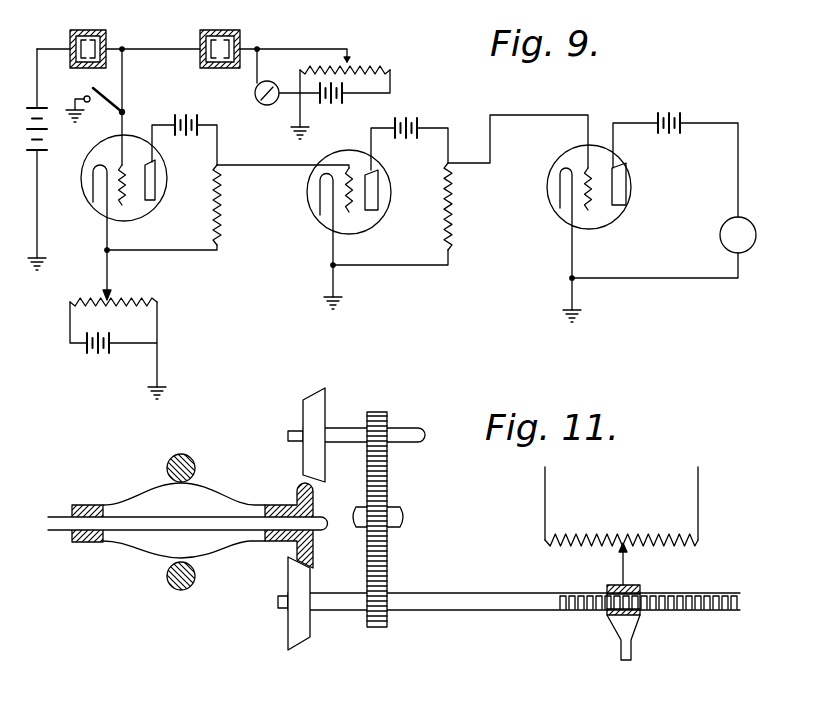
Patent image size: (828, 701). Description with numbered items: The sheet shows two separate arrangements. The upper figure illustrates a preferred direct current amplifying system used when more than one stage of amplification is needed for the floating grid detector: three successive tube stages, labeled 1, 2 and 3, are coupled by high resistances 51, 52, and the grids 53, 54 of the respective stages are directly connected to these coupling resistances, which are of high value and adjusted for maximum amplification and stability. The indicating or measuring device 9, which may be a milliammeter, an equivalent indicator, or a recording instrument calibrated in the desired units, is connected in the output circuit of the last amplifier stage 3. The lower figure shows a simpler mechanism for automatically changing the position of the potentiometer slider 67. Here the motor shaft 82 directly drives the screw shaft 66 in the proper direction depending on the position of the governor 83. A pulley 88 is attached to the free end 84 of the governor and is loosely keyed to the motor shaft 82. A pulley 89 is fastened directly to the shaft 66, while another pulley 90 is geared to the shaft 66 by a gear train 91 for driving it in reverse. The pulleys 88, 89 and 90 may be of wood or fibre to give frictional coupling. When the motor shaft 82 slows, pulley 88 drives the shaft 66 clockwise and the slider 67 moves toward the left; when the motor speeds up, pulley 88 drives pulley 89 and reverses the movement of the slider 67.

In FIG. 9, the first vacuum tube 1 is at (138, 218).
In FIG. 9, the second vacuum tube 2 is at (360, 229).
In FIG. 9, the third vacuum tube 3 is at (608, 229).
In FIG. 9, the indicating or measuring device 9 is at (758, 215).
In FIG. 9, the coupling resistance 51 is at (221, 220).
In FIG. 9, the coupling resistance 52 is at (462, 201).
In FIG. 9, the grid 53 is at (353, 166).
In FIG. 9, the grid 54 is at (591, 167).
In FIG. 11, the screw shaft 66 is at (490, 592).
In FIG. 11, the slider 67 is at (620, 551).
In FIG. 11, the motor shaft 82 is at (63, 528).
In FIG. 11, the governor 83 is at (222, 498).
In FIG. 11, the free end 84 is at (254, 541).
In FIG. 11, the pulley 88 is at (301, 492).
In FIG. 11, the pulley 89 is at (306, 630).
In FIG. 11, the pulley 90 is at (317, 395).
In FIG. 11, the gear train 91 is at (397, 494).